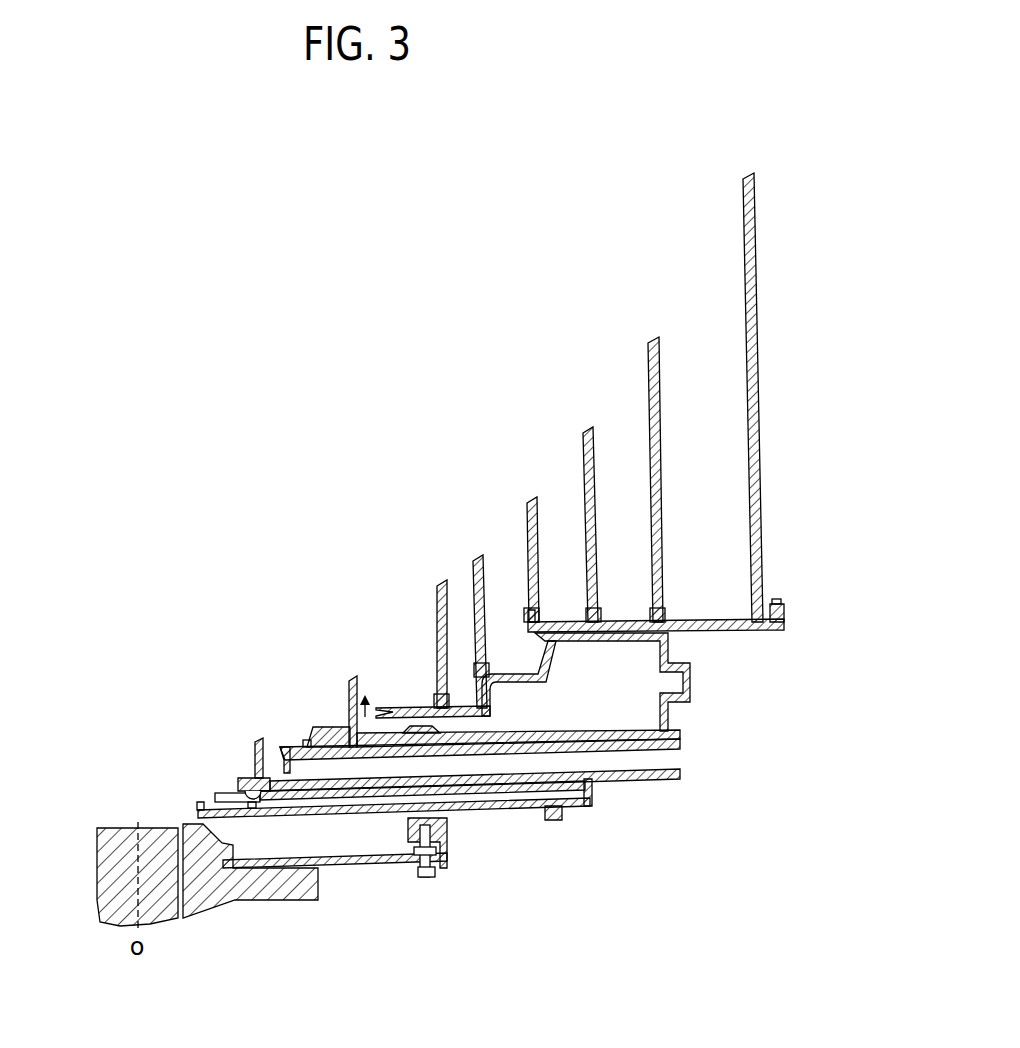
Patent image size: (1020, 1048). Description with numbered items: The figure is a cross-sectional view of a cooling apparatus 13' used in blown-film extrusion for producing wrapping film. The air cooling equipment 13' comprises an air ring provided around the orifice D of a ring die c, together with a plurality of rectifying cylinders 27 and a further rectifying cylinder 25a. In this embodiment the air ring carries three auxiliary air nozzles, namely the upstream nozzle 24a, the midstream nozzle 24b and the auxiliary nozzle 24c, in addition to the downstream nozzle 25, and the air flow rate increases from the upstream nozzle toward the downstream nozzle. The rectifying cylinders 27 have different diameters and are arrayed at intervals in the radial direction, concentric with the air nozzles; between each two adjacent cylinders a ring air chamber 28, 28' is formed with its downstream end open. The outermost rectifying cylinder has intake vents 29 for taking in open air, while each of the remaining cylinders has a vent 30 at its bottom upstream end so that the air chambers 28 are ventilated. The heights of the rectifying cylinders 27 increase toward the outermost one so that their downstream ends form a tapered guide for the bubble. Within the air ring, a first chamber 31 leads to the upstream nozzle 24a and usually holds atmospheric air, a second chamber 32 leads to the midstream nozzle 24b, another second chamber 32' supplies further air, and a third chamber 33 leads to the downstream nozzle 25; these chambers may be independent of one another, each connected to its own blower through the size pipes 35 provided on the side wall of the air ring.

The air cooling equipment 13' is at (300, 442).
The upstream nozzle 24a is at (192, 818).
The midstream nozzle 24b is at (207, 796).
The auxiliary air nozzle 24c is at (274, 765).
The downstream nozzle 25 is at (374, 696).
The rectifying cylinder 25a is at (349, 686).
The rectifying cylinders 27 is at (440, 583).
The ring air chamber 28 is at (580, 533).
The ring air chamber 28' is at (409, 634).
The intake vents 29 is at (757, 370).
The vent 30 is at (437, 704).
The first chamber 31 is at (286, 850).
The second chamber 32 is at (470, 823).
The second chamber 32' is at (529, 813).
The third chamber 33 is at (587, 704).
The size pipes 35 is at (692, 664).
The ring die c is at (118, 828).
The orifice D is at (170, 830).